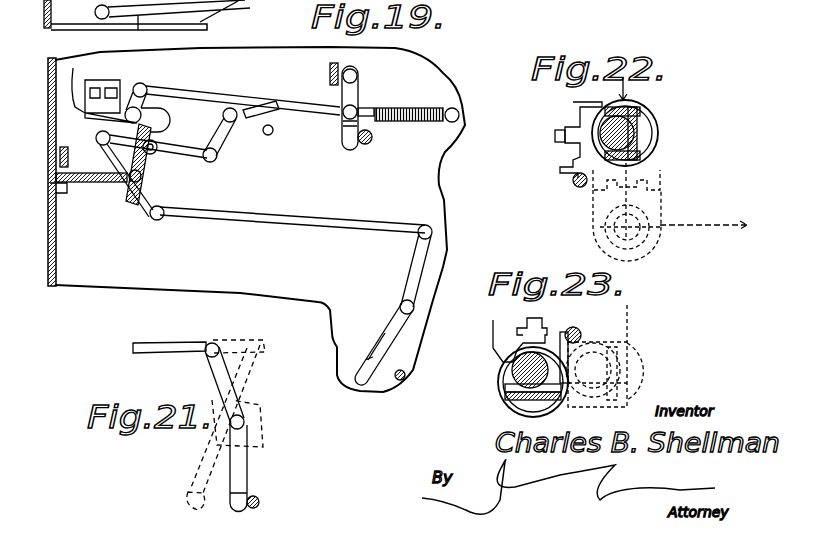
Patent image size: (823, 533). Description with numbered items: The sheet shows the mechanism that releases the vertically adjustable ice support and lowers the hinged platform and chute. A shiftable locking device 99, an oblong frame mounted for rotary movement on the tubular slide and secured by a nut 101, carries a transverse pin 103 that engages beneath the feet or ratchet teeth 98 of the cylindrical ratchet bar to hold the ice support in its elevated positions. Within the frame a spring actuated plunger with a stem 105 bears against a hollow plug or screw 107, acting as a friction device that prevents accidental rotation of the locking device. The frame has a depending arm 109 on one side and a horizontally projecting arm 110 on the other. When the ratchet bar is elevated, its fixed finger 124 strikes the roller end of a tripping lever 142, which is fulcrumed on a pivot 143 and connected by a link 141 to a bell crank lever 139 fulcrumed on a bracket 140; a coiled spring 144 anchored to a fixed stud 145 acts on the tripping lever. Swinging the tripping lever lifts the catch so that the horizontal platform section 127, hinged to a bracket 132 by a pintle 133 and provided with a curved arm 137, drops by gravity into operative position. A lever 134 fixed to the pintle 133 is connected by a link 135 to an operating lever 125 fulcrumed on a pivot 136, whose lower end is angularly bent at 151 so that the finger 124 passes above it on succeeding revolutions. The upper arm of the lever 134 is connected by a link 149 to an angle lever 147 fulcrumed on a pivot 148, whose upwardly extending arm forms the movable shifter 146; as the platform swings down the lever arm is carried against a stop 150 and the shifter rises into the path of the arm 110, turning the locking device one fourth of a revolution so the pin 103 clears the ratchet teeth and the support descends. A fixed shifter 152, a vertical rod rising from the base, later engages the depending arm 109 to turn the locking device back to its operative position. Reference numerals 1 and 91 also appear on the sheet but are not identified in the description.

In FIG. 19, the machine frame 1 is at (37, 8).
In FIG. 22, the shaft 91 is at (655, 128).
In FIG. 23, the shaft 91 is at (512, 358).
In FIG. 22, the feet 98 is at (648, 145).
In FIG. 23, the feet 98 is at (548, 358).
In FIG. 22, the shiftable locking device 99 is at (580, 123).
In FIG. 23, the shiftable locking device 99 is at (547, 337).
In FIG. 22, the nut 101 is at (632, 105).
In FIG. 23, the nut 101 is at (515, 400).
In FIG. 22, the transverse pin 103 is at (648, 112).
In FIG. 23, the transverse pin 103 is at (512, 416).
In FIG. 22, the stem 105 is at (555, 133).
In FIG. 22, the hollow plug or screw 107 is at (565, 150).
In FIG. 22, the depending arm 109 is at (580, 120).
In FIG. 23, the depending arm 109 is at (590, 322).
In FIG. 19, the horizontally projecting arm 110 is at (372, 71).
In FIG. 22, the horizontally projecting arm 110 is at (560, 168).
In FIG. 23, the horizontally projecting arm 110 is at (481, 381).
In FIG. 19, the fixed finger 124 is at (380, 132).
In FIG. 21, the fixed finger 124 is at (260, 502).
In FIG. 19, the operating lever 125 is at (395, 338).
In FIG. 21, the operating lever 125 is at (244, 458).
In FIG. 19, the horizontal platform section 127 is at (56, 120).
In FIG. 19, the bracket 132 is at (33, 190).
In FIG. 19, the pintle 133 is at (143, 177).
In FIG. 19, the lever 134 is at (107, 155).
In FIG. 19, the link 135 is at (140, 30).
In FIG. 21, the link 135 is at (173, 347).
In FIG. 19, the pivot 136 is at (167, 120).
In FIG. 21, the pivot 136 is at (244, 420).
In FIG. 19, the curved arm 137 is at (207, 5).
In FIG. 19, the bell crank lever 139 is at (104, 90).
In FIG. 19, the bracket 140 is at (62, 60).
In FIG. 19, the link 141 is at (330, 75).
In FIG. 19, the tripping lever 142 is at (372, 136).
In FIG. 19, the pivot 143 is at (360, 80).
In FIG. 19, the coiled spring 144 is at (450, 105).
In FIG. 19, the fixed stud 145 is at (458, 124).
In FIG. 19, the movable shifter 146 is at (252, 100).
In FIG. 22, the movable shifter 146 is at (577, 183).
In FIG. 19, the angle lever 147 is at (222, 100).
In FIG. 19, the pivot 148 is at (248, 112).
In FIG. 19, the link 149 is at (330, 77).
In FIG. 19, the stop 150 is at (304, 176).
In FIG. 19, the angular bend 151 is at (383, 357).
In FIG. 21, the angular bend 151 is at (187, 463).
In FIG. 23, the fixed shifter 152 is at (583, 332).